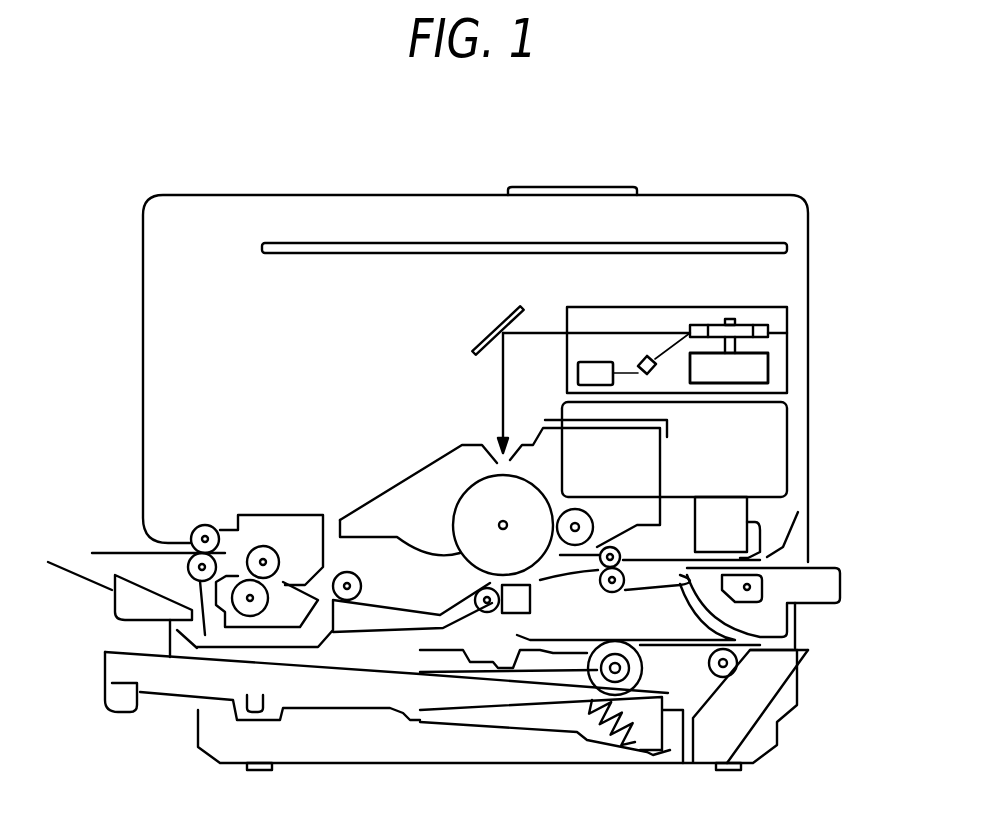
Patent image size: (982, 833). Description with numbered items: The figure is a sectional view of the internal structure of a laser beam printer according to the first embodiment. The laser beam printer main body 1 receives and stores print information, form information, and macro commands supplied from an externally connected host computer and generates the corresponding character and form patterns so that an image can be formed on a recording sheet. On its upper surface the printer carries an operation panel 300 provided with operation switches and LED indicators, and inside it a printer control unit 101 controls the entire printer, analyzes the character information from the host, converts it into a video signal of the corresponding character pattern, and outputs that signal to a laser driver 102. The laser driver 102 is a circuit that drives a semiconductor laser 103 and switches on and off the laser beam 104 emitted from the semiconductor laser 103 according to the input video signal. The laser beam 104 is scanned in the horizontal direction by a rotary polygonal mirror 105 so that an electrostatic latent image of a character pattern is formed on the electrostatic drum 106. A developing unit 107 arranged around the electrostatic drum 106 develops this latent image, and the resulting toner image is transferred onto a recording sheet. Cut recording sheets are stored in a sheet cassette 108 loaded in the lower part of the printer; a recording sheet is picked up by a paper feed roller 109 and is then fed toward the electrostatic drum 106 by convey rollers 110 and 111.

The laser beam printer main body 1 is at (733, 193).
The operation panel 300 is at (587, 187).
The printer control unit 101 is at (787, 247).
The laser driver 102 is at (578, 370).
The semiconductor laser 103 is at (657, 370).
The laser beam 104 is at (627, 332).
The rotary polygonal mirror 105 is at (768, 333).
The electrostatic drum 106 is at (470, 483).
The developing unit 107 is at (370, 510).
The sheet cassette 108 is at (105, 700).
The paper feed roller 109 is at (600, 670).
The convey roller 110 is at (740, 665).
The convey roller 111 is at (625, 590).